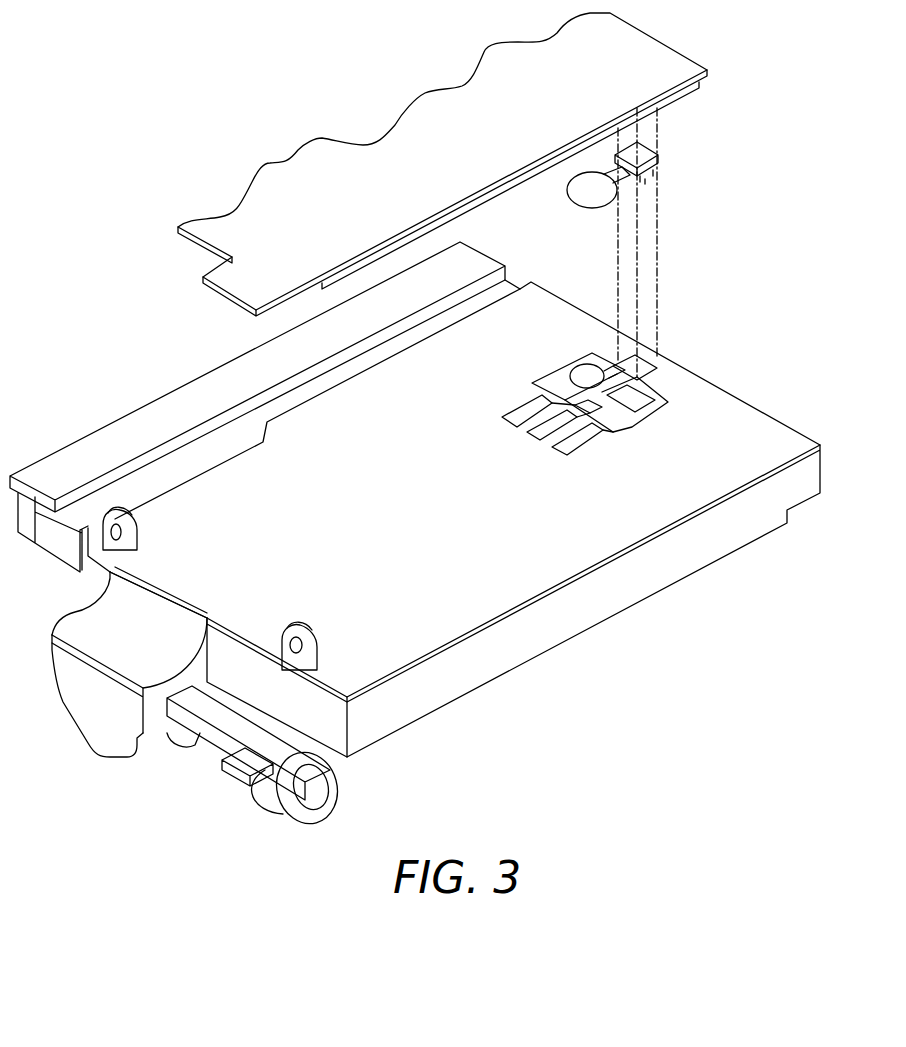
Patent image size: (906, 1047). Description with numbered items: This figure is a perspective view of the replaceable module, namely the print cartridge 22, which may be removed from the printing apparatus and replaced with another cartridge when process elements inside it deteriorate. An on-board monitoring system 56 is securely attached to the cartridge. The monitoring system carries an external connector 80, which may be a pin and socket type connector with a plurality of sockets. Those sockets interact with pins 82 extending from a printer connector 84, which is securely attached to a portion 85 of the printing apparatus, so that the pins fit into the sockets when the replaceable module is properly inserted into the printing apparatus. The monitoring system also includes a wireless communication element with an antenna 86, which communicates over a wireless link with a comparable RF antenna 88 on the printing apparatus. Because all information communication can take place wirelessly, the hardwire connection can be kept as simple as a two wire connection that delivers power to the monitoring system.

The print cartridge 22 is at (757, 392).
The on-board monitoring system 56 is at (611, 407).
The external connector 80 is at (645, 362).
The pins 82 is at (648, 178).
The printer connector 84 is at (658, 155).
The portion of the printing apparatus 85 is at (653, 43).
The antenna 86 is at (560, 372).
The RF antenna 88 is at (578, 197).